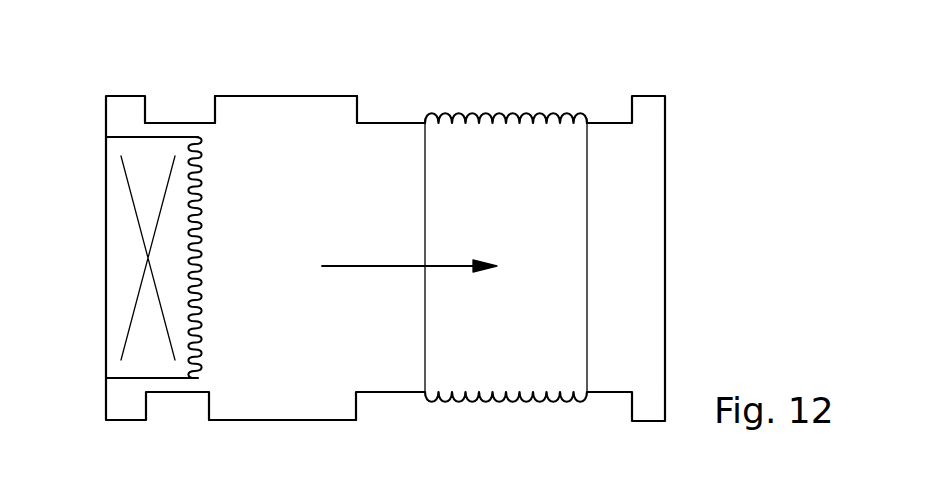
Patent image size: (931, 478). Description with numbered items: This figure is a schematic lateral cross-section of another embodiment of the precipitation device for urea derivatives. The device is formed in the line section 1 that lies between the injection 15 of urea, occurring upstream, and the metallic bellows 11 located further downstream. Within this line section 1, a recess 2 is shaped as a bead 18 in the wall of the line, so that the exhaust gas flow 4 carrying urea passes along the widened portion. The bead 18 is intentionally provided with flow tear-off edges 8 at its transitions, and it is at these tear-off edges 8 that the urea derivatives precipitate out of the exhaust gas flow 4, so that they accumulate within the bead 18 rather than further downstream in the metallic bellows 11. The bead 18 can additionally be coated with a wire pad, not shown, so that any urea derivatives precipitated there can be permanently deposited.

The line section 1 is at (373, 123).
The recess 2 is at (314, 107).
The exhaust gas flow 4 is at (389, 266).
The flow tear-off edges 8 is at (218, 130).
The metallic bellows 11 is at (485, 113).
The injection 15 is at (122, 248).
The bead 18 is at (257, 420).